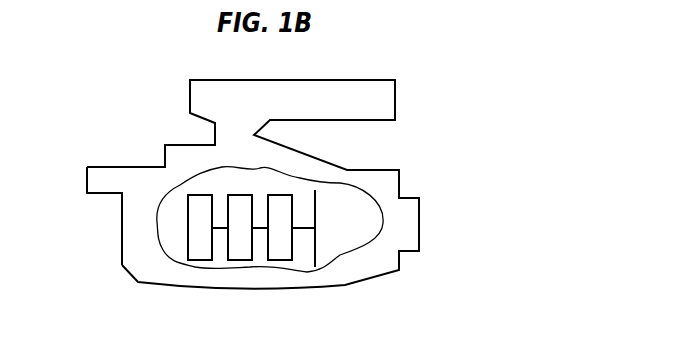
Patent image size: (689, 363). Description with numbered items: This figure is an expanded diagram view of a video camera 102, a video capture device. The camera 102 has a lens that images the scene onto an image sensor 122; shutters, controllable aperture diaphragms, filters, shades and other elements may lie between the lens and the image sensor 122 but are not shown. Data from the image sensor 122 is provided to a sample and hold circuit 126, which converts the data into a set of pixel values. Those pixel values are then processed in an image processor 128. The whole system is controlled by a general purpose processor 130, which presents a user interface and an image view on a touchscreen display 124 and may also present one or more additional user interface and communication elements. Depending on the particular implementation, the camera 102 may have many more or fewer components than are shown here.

The video camera 102 is at (157, 120).
The image sensor 122 is at (320, 245).
The touchscreen display 124 is at (101, 195).
The sample and hold circuit 126 is at (278, 250).
The image processor 128 is at (238, 250).
The general purpose processor 130 is at (197, 250).